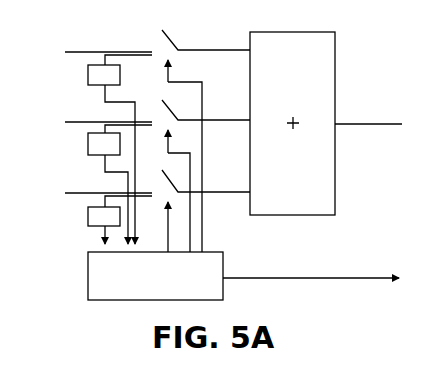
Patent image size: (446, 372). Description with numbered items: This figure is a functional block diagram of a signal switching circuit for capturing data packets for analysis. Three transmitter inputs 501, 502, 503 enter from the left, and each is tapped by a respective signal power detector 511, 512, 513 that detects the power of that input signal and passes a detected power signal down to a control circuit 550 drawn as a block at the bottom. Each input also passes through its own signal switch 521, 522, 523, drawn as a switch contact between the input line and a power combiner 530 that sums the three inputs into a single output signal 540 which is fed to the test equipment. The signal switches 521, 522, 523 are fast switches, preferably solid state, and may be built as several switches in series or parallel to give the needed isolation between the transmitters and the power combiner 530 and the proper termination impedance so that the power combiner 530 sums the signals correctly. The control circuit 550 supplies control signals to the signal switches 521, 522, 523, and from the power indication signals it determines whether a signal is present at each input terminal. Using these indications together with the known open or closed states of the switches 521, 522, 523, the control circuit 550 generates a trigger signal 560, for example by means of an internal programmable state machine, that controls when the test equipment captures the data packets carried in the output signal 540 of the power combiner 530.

The transmitter input 501 is at (80, 51).
The signal power detector 511 is at (88, 78).
The transmitter input 502 is at (80, 121).
The signal power detector 512 is at (88, 148).
The transmitter input 503 is at (80, 192).
The signal power detector 513 is at (88, 219).
The signal switch 521 is at (174, 37).
The signal switch 522 is at (174, 107).
The signal switch 523 is at (174, 178).
The power combiner 530 is at (337, 52).
The output signal 540 is at (366, 120).
The control circuit 550 is at (172, 289).
The trigger signal 560 is at (366, 275).